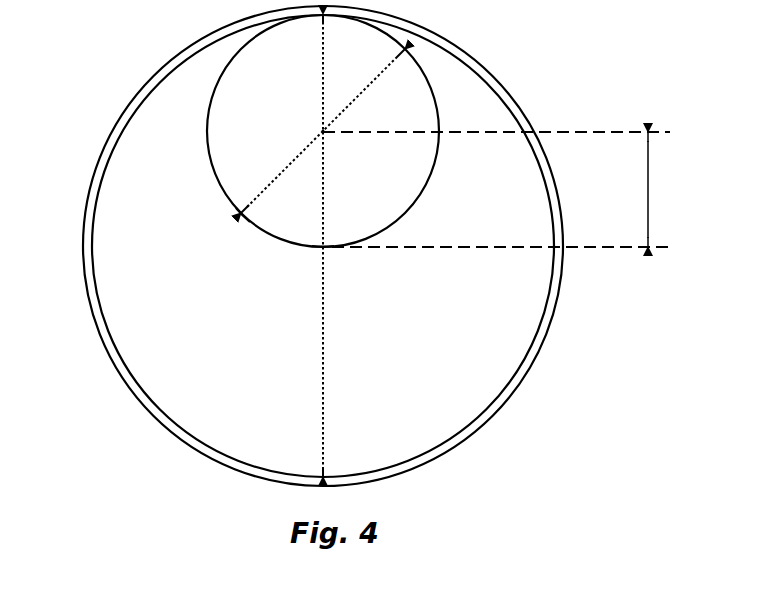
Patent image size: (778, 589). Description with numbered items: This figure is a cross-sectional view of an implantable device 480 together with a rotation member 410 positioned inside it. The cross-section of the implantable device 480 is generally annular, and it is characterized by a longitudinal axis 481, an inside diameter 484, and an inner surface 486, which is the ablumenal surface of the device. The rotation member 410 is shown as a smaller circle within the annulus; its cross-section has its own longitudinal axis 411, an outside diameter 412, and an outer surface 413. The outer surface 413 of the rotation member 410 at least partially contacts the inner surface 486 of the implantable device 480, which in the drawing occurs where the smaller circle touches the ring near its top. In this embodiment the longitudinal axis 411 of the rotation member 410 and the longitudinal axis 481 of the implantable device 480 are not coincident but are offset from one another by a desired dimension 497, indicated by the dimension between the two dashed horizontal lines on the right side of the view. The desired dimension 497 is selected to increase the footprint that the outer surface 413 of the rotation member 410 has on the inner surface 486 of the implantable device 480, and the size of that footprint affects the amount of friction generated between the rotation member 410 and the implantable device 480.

The implantable device 480 is at (91, 182).
The inner surface 486 is at (94, 245).
The rotation member 410 is at (203, 132).
The longitudinal axis 411 is at (322, 132).
The outside diameter 412 is at (362, 94).
The outer surface 413 is at (224, 201).
The longitudinal axis 481 is at (321, 248).
The inside diameter 484 is at (324, 402).
The desired dimension 497 is at (649, 183).